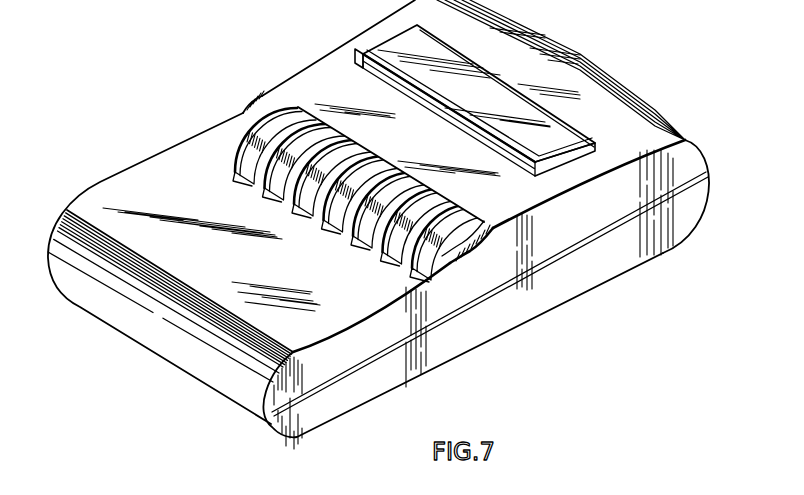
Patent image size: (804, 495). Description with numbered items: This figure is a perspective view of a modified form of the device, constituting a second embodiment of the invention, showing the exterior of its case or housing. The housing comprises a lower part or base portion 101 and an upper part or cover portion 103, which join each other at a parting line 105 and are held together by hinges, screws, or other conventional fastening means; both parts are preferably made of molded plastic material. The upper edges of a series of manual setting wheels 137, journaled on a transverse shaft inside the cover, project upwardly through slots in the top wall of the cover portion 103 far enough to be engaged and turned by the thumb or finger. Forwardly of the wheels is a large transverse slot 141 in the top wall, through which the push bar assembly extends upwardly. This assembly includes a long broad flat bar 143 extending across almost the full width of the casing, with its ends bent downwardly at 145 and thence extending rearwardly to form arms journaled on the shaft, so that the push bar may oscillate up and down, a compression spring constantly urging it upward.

The base portion 101 is at (558, 293).
The cover portion 103 is at (683, 150).
The parting line 105 is at (607, 224).
The manual setting wheels 137 is at (234, 175).
The transverse slot 141 is at (438, 117).
The flat bar 143 is at (380, 44).
The downwardly bent ends 145 is at (578, 160).